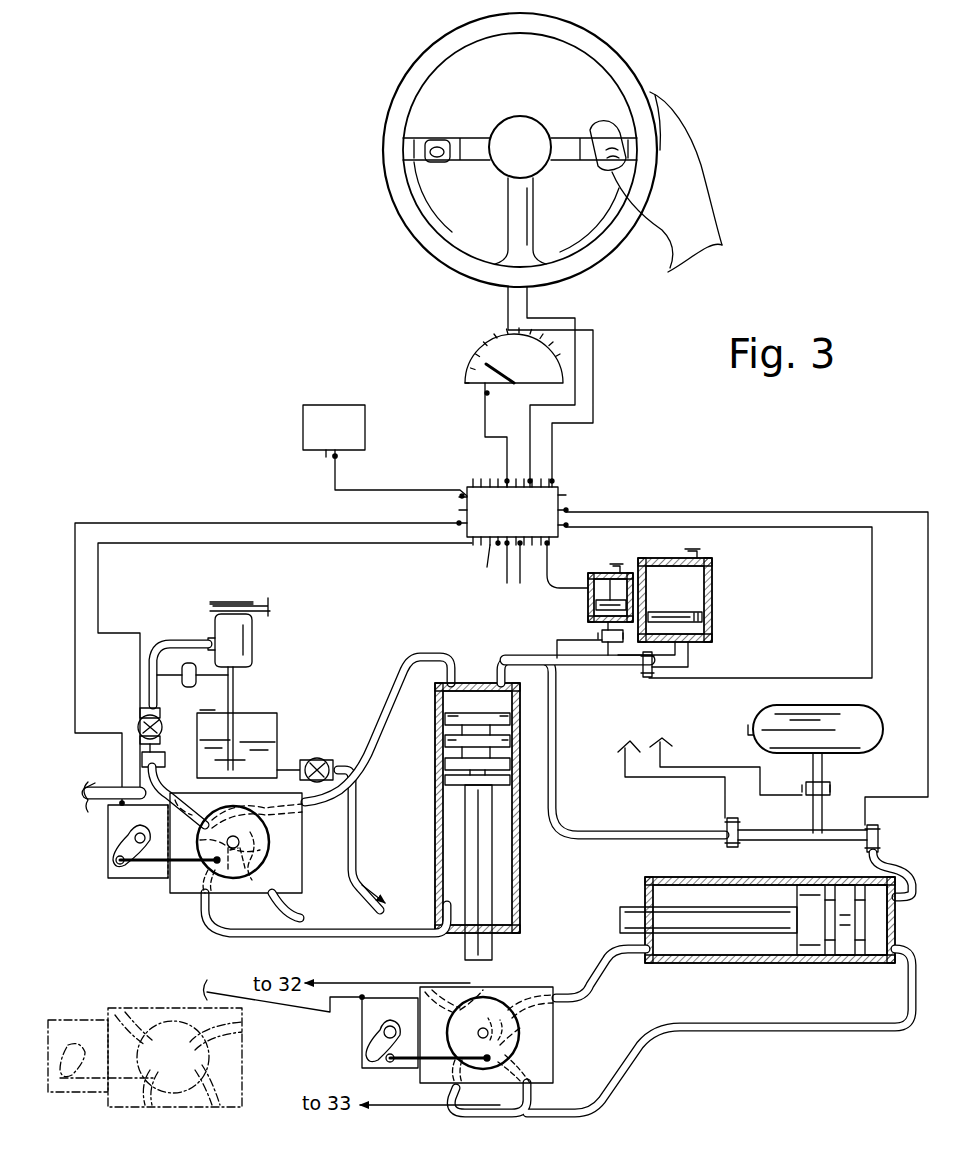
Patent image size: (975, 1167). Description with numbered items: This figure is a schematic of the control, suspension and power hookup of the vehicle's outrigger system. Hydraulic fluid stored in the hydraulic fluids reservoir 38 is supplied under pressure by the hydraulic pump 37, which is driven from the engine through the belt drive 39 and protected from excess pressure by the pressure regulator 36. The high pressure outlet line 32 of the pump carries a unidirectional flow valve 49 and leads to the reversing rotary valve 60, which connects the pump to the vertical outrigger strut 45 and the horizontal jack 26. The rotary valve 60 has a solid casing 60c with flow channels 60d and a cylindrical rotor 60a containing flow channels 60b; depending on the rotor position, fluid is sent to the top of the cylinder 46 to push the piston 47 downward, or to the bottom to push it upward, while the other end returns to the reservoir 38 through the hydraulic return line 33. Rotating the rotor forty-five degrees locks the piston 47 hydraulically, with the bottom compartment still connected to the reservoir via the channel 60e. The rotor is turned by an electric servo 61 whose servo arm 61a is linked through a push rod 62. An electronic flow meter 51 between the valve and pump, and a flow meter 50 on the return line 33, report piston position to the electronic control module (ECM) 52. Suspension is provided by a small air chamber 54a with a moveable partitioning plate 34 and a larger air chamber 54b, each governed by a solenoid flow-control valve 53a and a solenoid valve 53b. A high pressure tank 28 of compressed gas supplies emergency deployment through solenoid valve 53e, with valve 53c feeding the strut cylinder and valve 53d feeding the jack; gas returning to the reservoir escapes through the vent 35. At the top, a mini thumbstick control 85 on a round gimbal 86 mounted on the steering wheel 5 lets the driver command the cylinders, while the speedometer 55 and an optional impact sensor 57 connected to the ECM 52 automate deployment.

The steering wheel 5 is at (613, 62).
The mini thumbstick control 85 is at (441, 145).
The round gimbal 86 is at (436, 160).
The speedometer 55 is at (487, 350).
The impact sensor 57 is at (318, 405).
The electronic control module (ECM) 52 is at (560, 495).
The belt drive 39 is at (270, 603).
The hydraulic pump 37 is at (245, 645).
The high pressure outlet line 32 is at (165, 645).
The pressure regulator 36 is at (189, 662).
The hydraulic fluids reservoir 38 is at (278, 735).
The vent 35 is at (200, 710).
The electronic flow meter 51 is at (140, 712).
The unidirectional flow valve 49 is at (142, 760).
The hydraulic return line 33 is at (300, 760).
The flow meter 50 is at (348, 780).
The vertical outrigger strut 45 is at (535, 878).
The cylinder 46 is at (520, 810).
The piston 47 is at (478, 885).
The moveable partitioning plate 34 is at (607, 596).
The small size air chamber 54a is at (588, 586).
The larger air chamber 54b is at (700, 578).
The solenoid flow-control valve 53a is at (612, 645).
The solenoid valve 53b is at (647, 678).
The high pressure tank 28 is at (872, 720).
The solenoid valve 53e is at (832, 788).
The valve 53c is at (730, 845).
The valve 53d is at (868, 850).
The horizontal jack 26 is at (772, 965).
The reversing rotary valve 60 is at (178, 897).
The cylindrical rotor 60a is at (268, 818).
The flow channels 60b is at (265, 845).
The solid casing 60c is at (268, 870).
The flow channels 60d is at (210, 893).
The channel 60e is at (505, 1018).
The electric servo 61 is at (105, 883).
The servo arm 61a is at (122, 848).
The push rod 62 is at (155, 862).